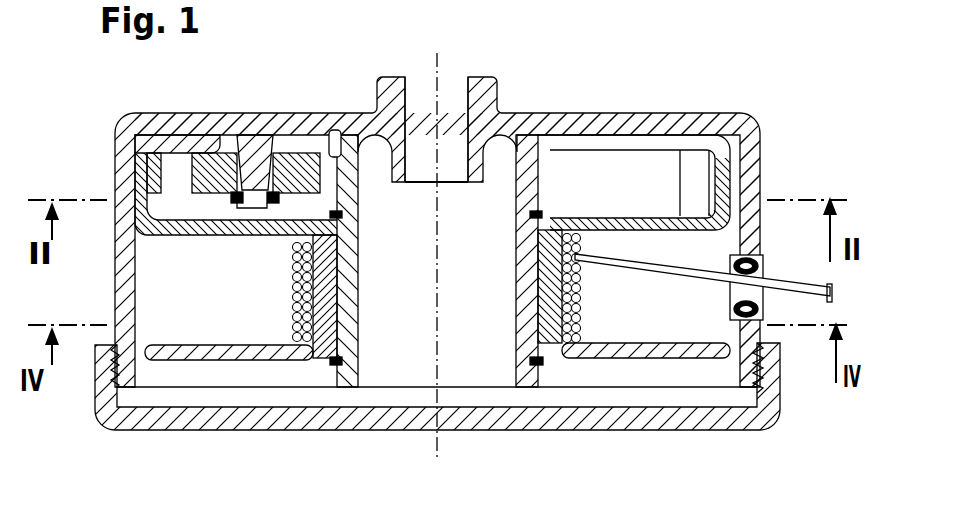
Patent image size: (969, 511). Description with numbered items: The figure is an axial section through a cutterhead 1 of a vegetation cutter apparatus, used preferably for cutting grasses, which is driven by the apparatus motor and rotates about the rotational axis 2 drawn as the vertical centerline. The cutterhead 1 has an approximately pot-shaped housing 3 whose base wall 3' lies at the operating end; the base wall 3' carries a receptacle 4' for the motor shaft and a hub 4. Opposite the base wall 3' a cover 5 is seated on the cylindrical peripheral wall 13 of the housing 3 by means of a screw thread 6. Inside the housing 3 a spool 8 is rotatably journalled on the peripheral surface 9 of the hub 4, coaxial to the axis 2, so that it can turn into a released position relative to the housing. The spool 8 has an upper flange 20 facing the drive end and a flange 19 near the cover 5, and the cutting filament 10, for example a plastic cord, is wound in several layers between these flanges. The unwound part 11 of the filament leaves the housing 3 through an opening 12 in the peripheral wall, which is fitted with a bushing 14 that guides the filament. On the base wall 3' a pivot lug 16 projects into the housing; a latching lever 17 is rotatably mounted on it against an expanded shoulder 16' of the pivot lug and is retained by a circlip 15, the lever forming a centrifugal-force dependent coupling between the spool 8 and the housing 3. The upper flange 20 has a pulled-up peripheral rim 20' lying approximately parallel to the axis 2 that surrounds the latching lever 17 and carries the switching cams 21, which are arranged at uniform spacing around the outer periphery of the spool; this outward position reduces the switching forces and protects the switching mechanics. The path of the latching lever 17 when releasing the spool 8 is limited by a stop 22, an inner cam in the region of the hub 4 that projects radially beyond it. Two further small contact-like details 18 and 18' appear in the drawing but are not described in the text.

The cutterhead 1 is at (611, 110).
The rotational axis 2 is at (438, 52).
The housing 3 is at (450, 217).
The base wall 3' is at (437, 91).
The hub 4 is at (437, 425).
The receptacle for the motor shaft 4' is at (477, 114).
The cover 5 is at (157, 417).
The screw thread 6 is at (112, 368).
The spool 8 is at (318, 343).
The peripheral surface 9 is at (343, 292).
The cutting filament 10 is at (590, 267).
The unwound part 11 is at (805, 290).
The opening 12 is at (733, 293).
The cylindrical peripheral wall 13 is at (755, 172).
The bushing 14 is at (767, 308).
The circlip 15 is at (235, 200).
The pivot lug 16 is at (255, 119).
The expanded shoulder 16' is at (296, 120).
The latching lever 17 is at (205, 165).
The upper contact 18 is at (436, 227).
The lower contact 18' is at (436, 351).
The flange 19 is at (230, 357).
The upper flange 20 is at (200, 221).
The peripheral rim 20' is at (108, 167).
The switching cams 21 is at (693, 168).
The stop 22 is at (336, 150).